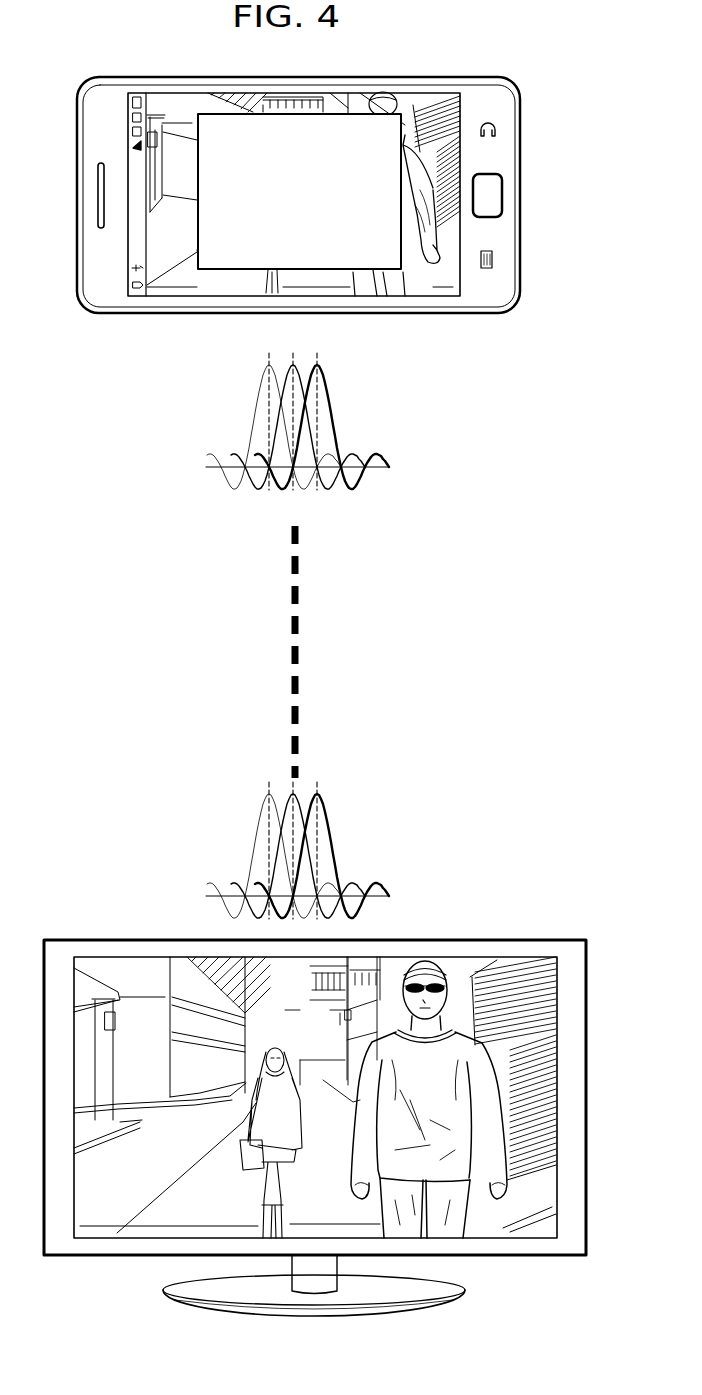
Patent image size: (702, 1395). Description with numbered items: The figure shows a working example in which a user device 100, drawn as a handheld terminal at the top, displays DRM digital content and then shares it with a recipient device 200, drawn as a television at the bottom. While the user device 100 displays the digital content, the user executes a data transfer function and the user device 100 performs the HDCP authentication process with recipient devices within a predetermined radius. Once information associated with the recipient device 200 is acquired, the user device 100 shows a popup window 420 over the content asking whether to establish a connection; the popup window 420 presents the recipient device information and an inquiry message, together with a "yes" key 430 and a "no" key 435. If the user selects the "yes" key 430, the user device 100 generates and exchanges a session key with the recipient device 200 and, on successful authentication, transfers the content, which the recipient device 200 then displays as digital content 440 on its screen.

The user device 100 is at (452, 75).
The recipient device 200 is at (463, 940).
The popup window 420 is at (213, 270).
The "yes" key 430 is at (277, 252).
The "no" key 435 is at (325, 252).
The digital content 440 is at (536, 957).